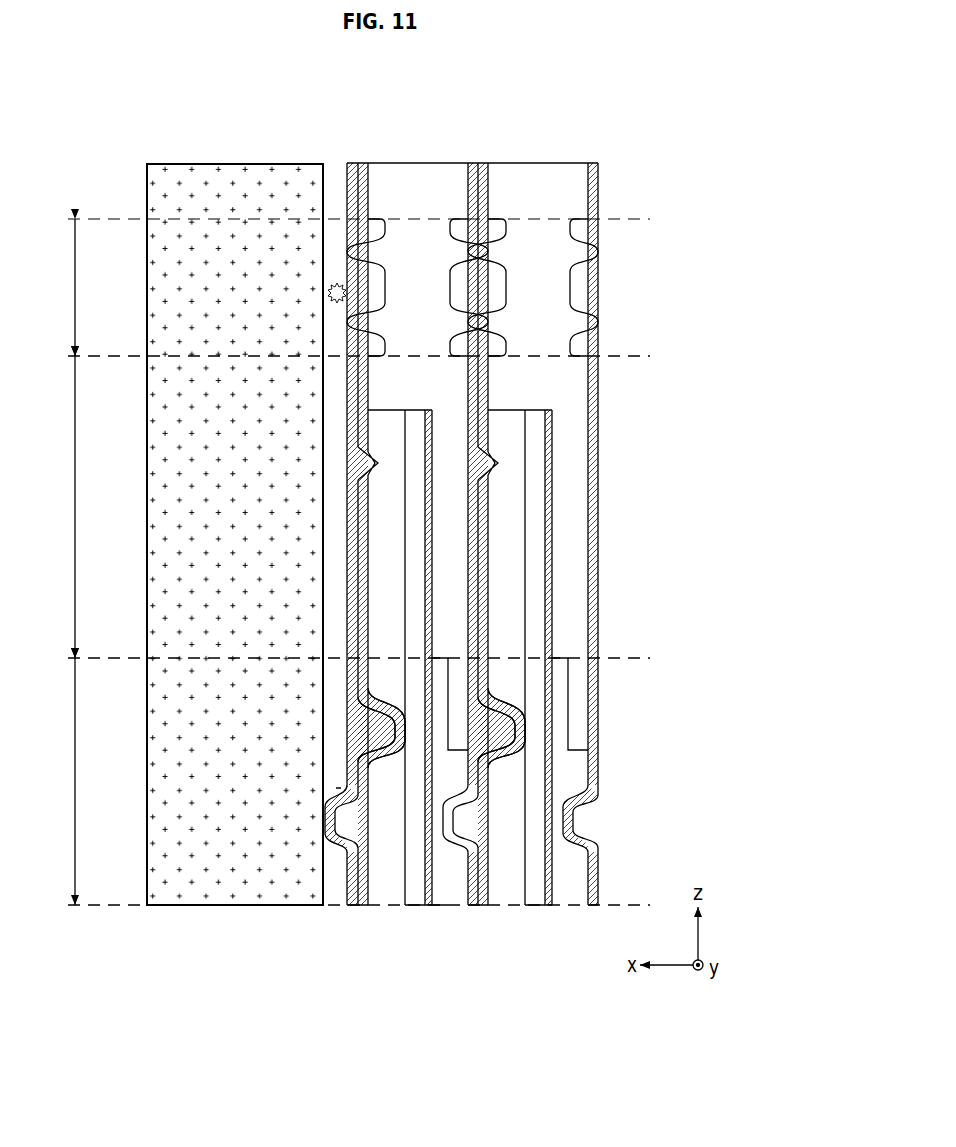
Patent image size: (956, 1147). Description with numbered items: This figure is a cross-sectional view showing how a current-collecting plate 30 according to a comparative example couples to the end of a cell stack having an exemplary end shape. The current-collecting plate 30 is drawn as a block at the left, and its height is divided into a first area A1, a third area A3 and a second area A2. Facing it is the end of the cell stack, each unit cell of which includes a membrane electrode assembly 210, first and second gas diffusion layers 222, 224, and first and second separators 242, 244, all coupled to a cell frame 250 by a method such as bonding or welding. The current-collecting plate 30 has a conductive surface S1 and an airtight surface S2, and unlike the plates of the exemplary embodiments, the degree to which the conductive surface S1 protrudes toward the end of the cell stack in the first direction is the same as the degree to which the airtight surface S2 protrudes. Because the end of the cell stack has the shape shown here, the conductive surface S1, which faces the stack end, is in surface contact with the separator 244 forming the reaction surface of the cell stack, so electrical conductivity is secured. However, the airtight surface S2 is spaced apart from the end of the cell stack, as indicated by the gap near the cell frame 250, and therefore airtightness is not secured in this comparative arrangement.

The current-collecting plate 30 is at (235, 173).
The conductive surface S1 is at (317, 880).
The airtight surface S2 is at (323, 247).
The cell frame 250 is at (418, 173).
The first separator 242 is at (367, 887).
The second separator 244 is at (333, 880).
The first gas diffusion layer 222 is at (415, 895).
The membrane electrode assembly 210 is at (427, 907).
The second gas diffusion layer 224 is at (442, 898).
The first area A1 is at (62, 287).
The second area A2 is at (62, 781).
The third area A3 is at (62, 507).